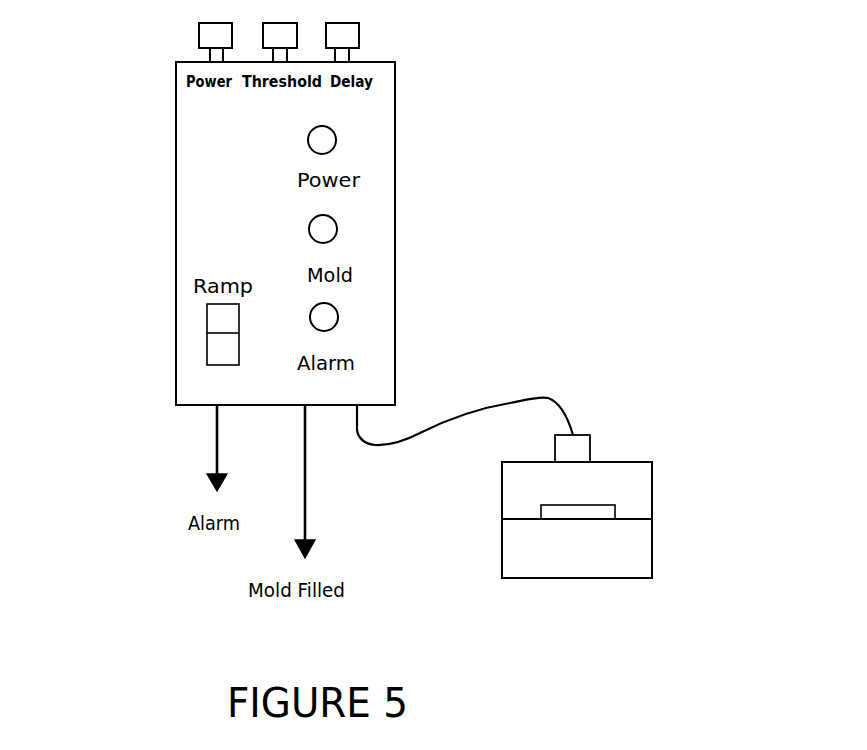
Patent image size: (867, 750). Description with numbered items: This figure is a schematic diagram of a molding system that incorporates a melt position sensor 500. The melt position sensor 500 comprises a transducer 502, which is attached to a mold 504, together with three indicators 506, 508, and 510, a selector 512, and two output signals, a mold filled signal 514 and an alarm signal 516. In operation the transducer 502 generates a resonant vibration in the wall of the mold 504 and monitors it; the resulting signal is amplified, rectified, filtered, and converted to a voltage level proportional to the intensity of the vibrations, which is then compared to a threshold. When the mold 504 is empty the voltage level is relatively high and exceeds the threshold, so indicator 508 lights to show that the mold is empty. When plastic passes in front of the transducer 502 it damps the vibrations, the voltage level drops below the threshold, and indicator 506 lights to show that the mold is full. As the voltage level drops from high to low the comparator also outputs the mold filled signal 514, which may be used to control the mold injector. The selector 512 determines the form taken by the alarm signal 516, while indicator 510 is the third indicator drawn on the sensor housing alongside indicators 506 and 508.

The melt position sensor 500 is at (617, 74).
The transducer 502 is at (590, 440).
The mold 504 is at (652, 495).
The indicator 506 is at (336, 137).
The indicator 508 is at (337, 225).
The indicator 510 is at (338, 314).
The selector 512 is at (207, 321).
The mold filled output signal 514 is at (305, 485).
The alarm output signal 516 is at (217, 438).